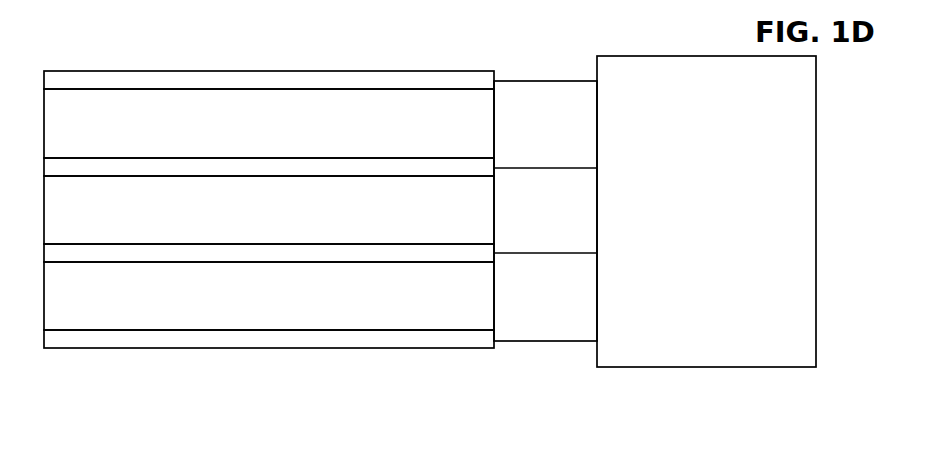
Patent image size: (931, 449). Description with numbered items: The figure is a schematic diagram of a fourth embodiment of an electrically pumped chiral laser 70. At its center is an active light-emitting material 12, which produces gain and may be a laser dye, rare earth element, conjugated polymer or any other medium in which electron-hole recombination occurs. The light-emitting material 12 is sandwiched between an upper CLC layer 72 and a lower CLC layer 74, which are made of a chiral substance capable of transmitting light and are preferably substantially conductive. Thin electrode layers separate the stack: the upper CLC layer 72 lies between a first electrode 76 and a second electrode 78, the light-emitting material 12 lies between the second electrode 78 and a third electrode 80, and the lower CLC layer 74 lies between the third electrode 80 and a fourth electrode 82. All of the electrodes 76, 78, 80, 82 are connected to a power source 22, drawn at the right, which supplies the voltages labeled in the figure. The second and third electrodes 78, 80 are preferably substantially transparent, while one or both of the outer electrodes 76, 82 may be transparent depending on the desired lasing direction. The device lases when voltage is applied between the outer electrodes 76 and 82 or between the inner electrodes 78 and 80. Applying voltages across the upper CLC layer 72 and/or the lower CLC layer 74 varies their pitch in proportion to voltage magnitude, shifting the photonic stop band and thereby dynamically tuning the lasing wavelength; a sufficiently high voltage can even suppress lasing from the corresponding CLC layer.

The light-emitting material 12 is at (331, 219).
The power source 22 is at (707, 367).
The chiral laser 70 is at (553, 63).
The upper CLC layer 72 is at (417, 125).
The lower CLC layer 74 is at (408, 297).
The first electrode 76 is at (200, 80).
The second electrode 78 is at (88, 167).
The third electrode 80 is at (97, 252).
The fourth electrode 82 is at (200, 338).